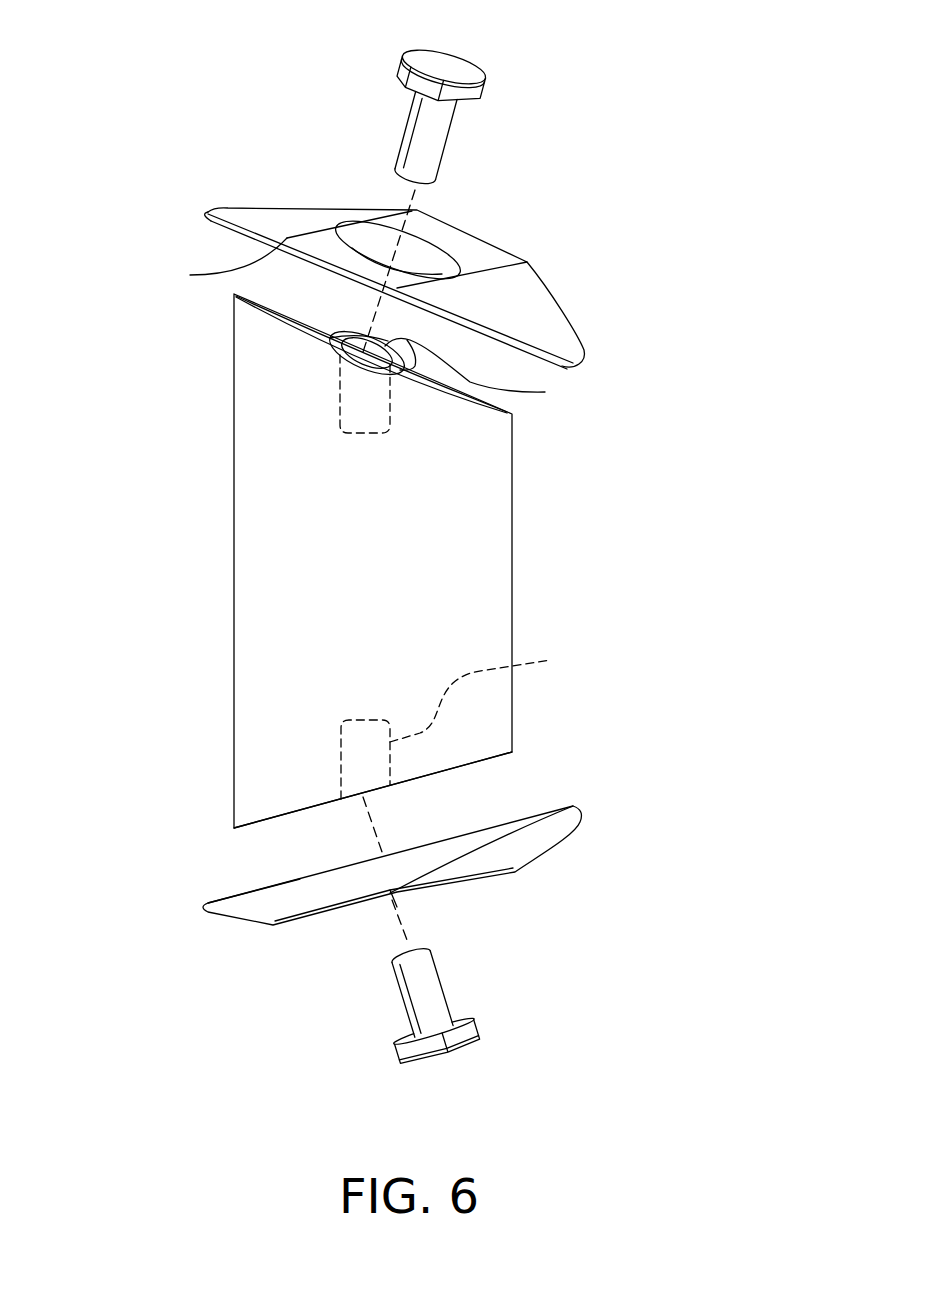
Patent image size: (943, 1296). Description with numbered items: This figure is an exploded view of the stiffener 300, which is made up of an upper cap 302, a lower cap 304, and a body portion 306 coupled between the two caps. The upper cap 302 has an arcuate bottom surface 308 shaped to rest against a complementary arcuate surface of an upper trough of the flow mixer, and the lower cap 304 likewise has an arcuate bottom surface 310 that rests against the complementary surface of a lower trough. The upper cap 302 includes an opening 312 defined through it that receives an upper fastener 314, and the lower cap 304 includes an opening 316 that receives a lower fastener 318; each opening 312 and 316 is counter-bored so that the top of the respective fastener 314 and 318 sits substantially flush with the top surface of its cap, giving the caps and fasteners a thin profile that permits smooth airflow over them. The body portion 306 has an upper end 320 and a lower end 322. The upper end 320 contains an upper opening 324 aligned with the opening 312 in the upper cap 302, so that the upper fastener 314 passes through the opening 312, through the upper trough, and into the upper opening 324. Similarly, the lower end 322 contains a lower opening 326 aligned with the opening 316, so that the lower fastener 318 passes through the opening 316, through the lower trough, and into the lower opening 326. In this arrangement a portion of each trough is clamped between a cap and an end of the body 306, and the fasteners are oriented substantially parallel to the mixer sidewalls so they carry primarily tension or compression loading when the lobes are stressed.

The stiffener 300 is at (148, 145).
The upper cap 302 is at (535, 323).
The lower cap 304 is at (537, 835).
The body portion 306 is at (280, 572).
The arcuate bottom surface 308 is at (192, 275).
The arcuate bottom surface 310 is at (293, 900).
The opening 312 is at (427, 252).
The upper fastener 314 is at (460, 72).
The opening 316 is at (397, 908).
The lower fastener 318 is at (410, 993).
The upper end 320 is at (257, 338).
The lower end 322 is at (260, 786).
The upper opening 324 is at (545, 392).
The lower opening 326 is at (502, 690).